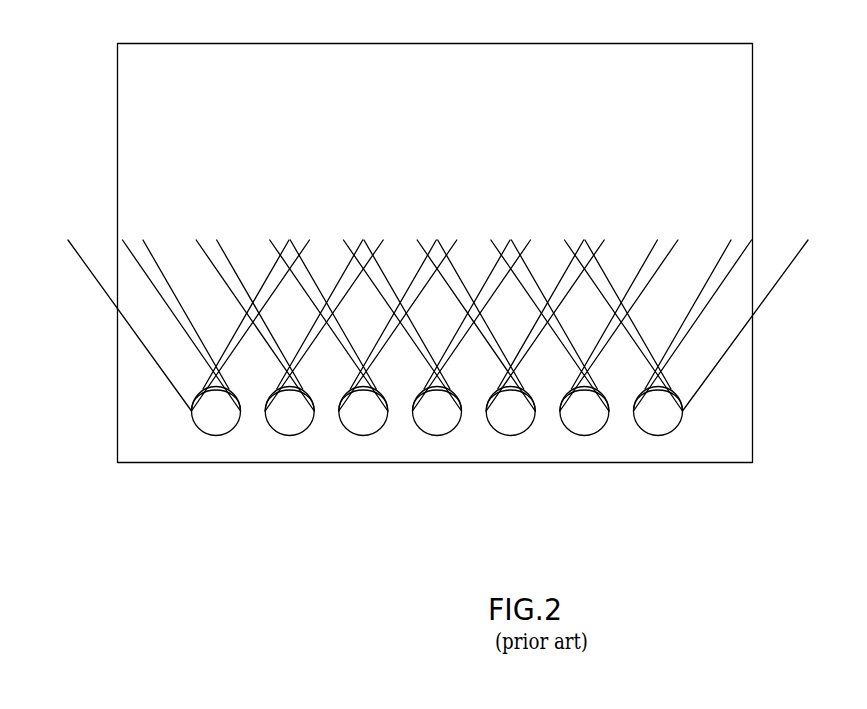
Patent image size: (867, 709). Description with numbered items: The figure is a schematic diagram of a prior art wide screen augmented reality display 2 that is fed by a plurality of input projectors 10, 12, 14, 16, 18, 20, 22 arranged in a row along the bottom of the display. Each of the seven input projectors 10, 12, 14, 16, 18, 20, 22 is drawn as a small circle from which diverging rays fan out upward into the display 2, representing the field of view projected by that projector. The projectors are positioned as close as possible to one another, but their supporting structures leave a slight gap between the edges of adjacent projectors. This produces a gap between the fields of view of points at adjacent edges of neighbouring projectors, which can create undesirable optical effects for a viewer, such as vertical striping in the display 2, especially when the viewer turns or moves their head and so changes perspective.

The wide screen augmented reality display 2 is at (118, 138).
The input projector 10 is at (217, 410).
The input projector 12 is at (291, 411).
The input projector 14 is at (364, 411).
The input projector 16 is at (438, 411).
The input projector 18 is at (512, 411).
The input projector 20 is at (586, 411).
The input projector 22 is at (658, 411).